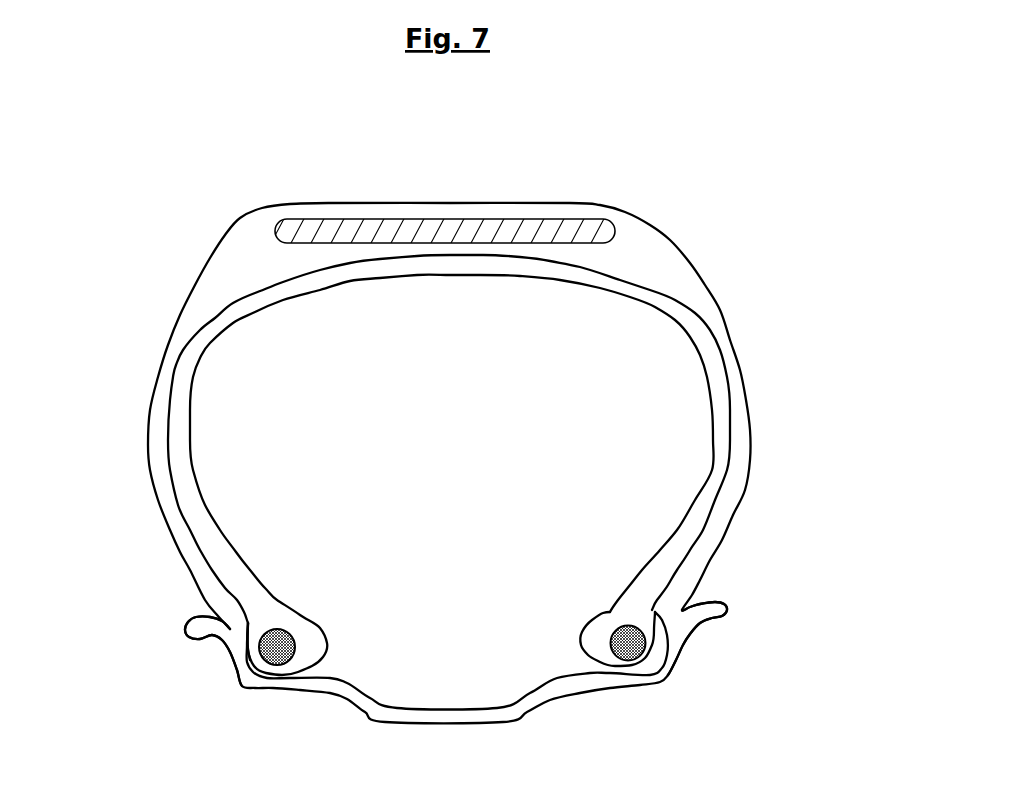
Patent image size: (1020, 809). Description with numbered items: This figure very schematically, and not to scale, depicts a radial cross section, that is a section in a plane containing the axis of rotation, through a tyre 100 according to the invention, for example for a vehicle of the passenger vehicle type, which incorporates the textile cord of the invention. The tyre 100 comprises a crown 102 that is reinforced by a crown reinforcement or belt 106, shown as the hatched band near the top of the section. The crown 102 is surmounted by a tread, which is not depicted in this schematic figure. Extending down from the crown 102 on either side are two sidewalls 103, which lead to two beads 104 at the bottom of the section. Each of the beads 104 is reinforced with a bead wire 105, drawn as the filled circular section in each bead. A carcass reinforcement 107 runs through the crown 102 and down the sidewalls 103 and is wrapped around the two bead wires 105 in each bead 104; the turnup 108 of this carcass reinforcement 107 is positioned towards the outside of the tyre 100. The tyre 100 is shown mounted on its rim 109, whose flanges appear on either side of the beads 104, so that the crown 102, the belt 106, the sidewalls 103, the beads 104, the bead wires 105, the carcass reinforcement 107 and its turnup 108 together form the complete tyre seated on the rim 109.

The tyre 100 is at (764, 366).
The crown 102 is at (538, 210).
The sidewall 103 is at (159, 433).
The bead 104 is at (305, 665).
The bead wire 105 is at (280, 647).
The crown reinforcement or belt 106 is at (440, 217).
The carcass reinforcement 107 is at (190, 347).
The turnup 108 is at (247, 624).
The rim 109 is at (237, 657).